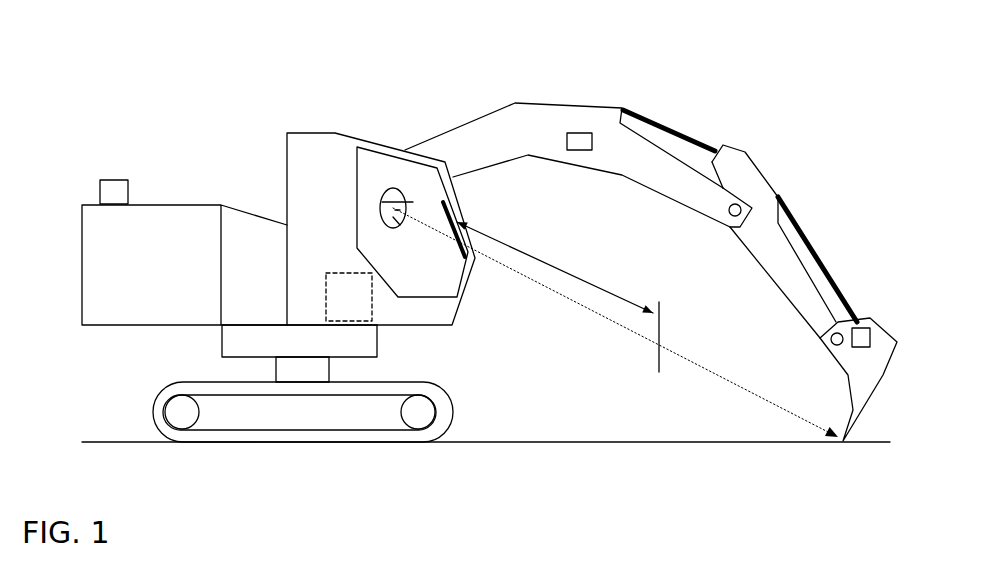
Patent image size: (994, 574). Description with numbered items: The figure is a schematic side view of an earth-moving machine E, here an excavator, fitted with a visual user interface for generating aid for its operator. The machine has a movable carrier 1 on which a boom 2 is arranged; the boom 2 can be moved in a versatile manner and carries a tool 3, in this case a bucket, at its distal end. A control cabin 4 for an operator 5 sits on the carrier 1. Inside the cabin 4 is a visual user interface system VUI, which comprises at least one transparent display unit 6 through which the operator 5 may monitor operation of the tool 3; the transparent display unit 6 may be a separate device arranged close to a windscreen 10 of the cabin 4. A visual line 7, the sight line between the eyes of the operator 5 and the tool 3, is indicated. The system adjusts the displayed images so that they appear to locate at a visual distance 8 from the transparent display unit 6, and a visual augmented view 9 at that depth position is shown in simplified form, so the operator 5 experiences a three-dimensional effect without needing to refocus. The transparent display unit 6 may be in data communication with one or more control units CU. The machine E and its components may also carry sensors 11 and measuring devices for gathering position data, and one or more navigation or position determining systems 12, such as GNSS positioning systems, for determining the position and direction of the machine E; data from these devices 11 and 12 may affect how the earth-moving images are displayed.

The earth-moving machine E is at (186, 58).
The movable carrier 1 is at (210, 175).
The boom 2 is at (497, 78).
The tool 3 is at (872, 365).
The control cabin 4 is at (330, 158).
The operator 5 is at (390, 190).
The transparent display unit 6 is at (459, 243).
The visual line 7 is at (722, 382).
The visual distance 8 is at (537, 257).
The visual augmented view 9 is at (660, 335).
The windscreen 10 is at (458, 205).
The sensors 11 is at (578, 133).
The navigation or position determining system 12 is at (115, 188).
The control unit CU is at (350, 273).
The visual user interface system VUI is at (507, 318).